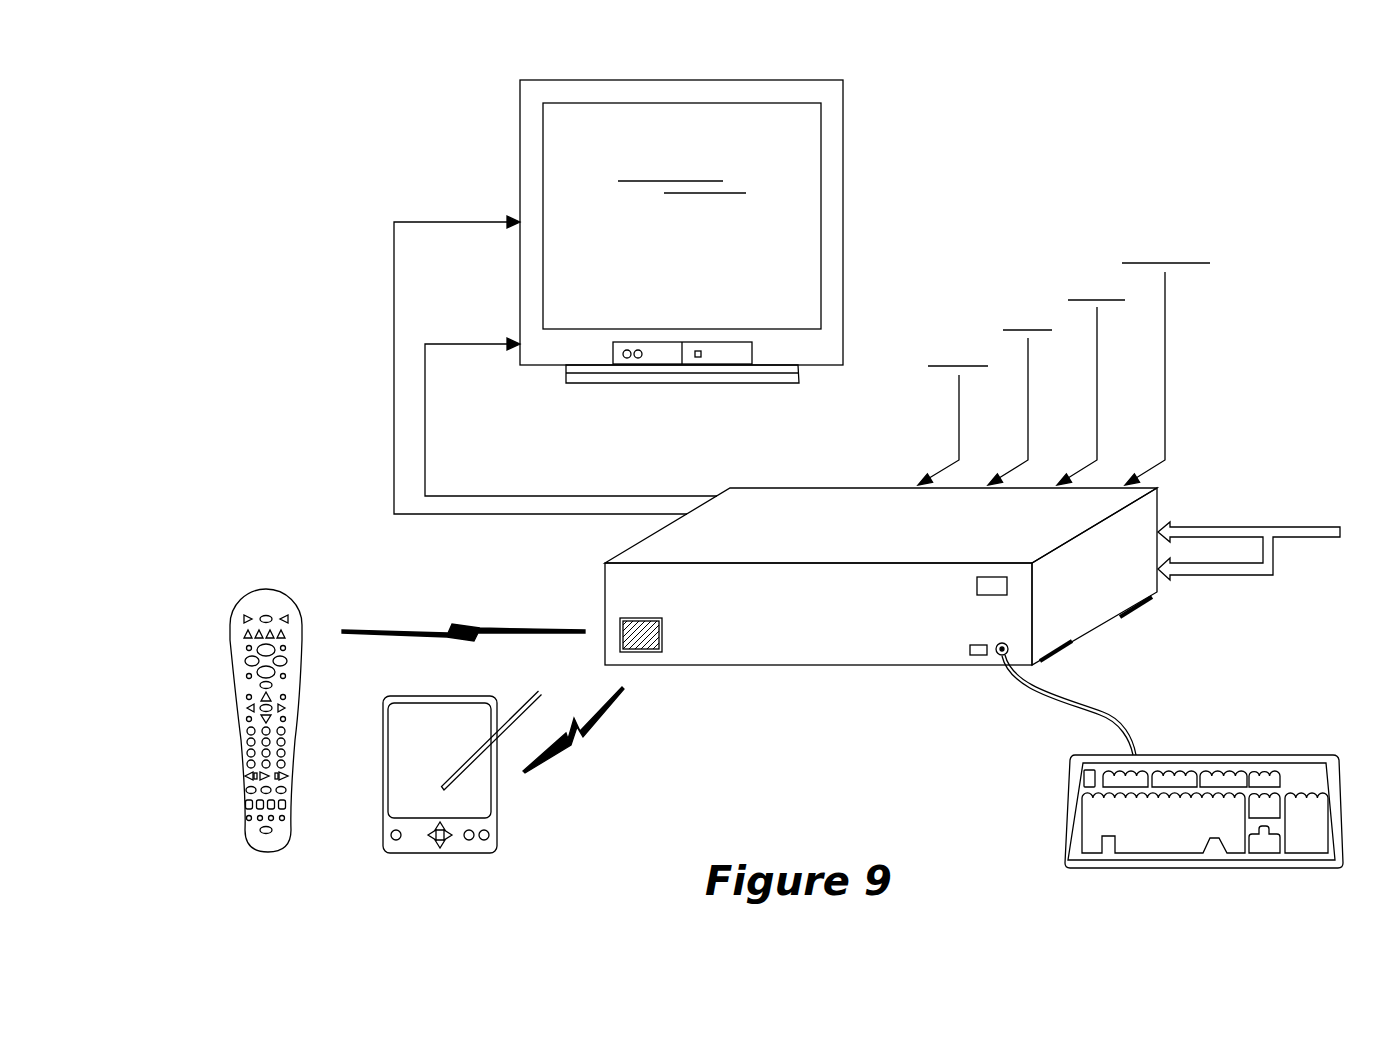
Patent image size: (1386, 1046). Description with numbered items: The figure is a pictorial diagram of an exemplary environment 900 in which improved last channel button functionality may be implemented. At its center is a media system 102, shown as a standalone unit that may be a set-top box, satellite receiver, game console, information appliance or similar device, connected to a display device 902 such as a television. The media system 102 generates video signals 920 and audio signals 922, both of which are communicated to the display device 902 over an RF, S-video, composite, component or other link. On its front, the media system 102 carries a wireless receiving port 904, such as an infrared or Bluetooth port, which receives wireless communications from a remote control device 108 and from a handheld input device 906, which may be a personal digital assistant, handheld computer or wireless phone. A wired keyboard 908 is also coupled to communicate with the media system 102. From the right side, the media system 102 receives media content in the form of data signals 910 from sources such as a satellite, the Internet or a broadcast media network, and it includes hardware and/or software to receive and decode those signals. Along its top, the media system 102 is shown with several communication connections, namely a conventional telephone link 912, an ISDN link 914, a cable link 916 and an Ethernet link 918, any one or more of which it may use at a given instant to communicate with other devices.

The environment 900 is at (1261, 145).
The display device 902 is at (843, 237).
The video signal 920 is at (481, 254).
The audio signal 922 is at (481, 378).
The media system 102 is at (792, 488).
The wireless receiving port 904 is at (655, 617).
The telephone link 912 is at (960, 328).
The ISDN link 914 is at (1030, 292).
The cable link 916 is at (1097, 262).
The Ethernet link 918 is at (1165, 225).
The data signals 910 is at (1227, 575).
The remote control device 108 is at (270, 587).
The handheld input device 906 is at (497, 802).
The wired keyboard 908 is at (1250, 755).